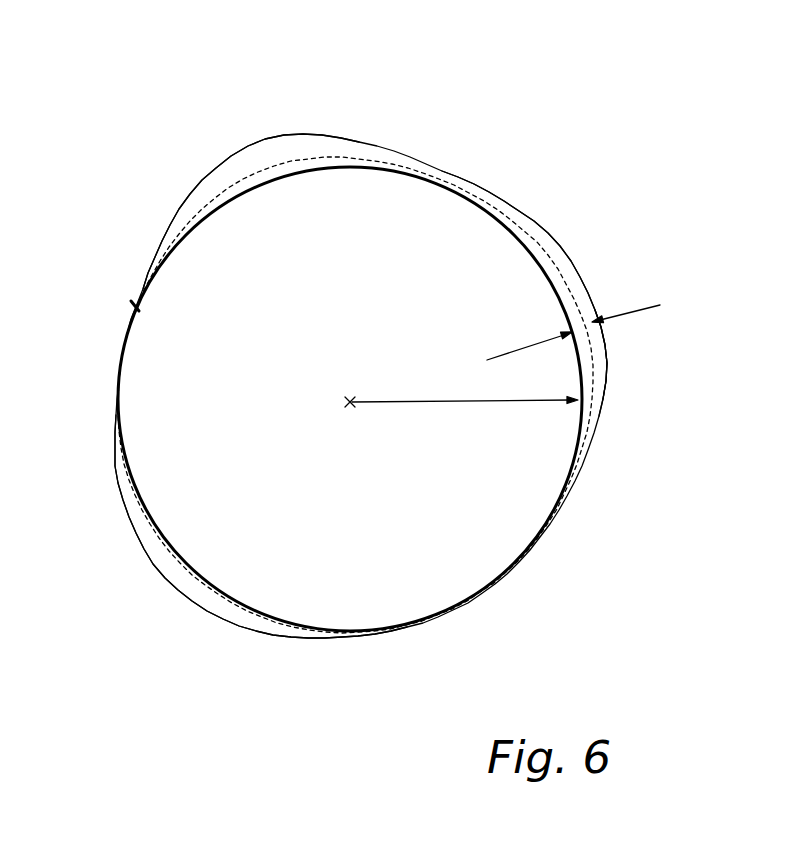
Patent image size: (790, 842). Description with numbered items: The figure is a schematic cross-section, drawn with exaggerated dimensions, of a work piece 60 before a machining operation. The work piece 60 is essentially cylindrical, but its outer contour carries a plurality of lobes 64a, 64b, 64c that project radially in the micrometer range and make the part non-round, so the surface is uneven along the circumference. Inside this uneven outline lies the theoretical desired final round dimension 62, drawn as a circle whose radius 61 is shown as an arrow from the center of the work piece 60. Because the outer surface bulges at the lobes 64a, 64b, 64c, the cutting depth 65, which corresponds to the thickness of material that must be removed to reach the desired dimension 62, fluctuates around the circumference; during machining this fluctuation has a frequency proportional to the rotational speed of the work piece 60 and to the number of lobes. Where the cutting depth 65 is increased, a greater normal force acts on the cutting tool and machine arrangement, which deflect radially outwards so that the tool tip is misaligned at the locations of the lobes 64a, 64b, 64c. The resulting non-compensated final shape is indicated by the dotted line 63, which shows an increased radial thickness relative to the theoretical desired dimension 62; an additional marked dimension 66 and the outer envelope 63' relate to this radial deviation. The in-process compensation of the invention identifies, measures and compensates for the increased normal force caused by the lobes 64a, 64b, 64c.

The work piece 60 is at (447, 535).
The radius 61 is at (527, 402).
The theoretical desired final round dimension 62 is at (133, 305).
The dotted line 63 is at (355, 341).
The outer envelope line 63' is at (361, 343).
The lobe 64a is at (578, 273).
The lobe 64b is at (160, 573).
The lobe 64c is at (258, 140).
The cutting depth 65 is at (602, 349).
The radial distance between circle and envelope 66 is at (591, 322).